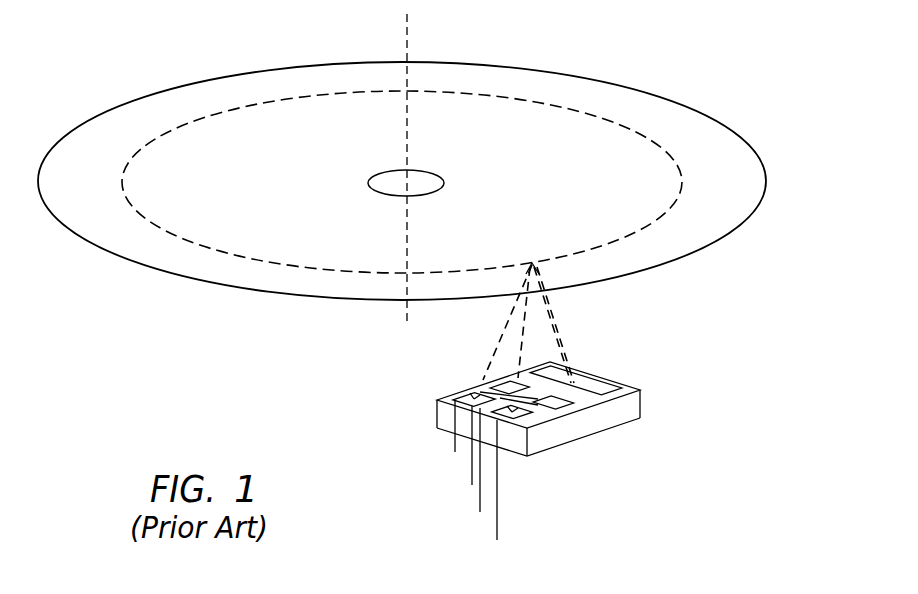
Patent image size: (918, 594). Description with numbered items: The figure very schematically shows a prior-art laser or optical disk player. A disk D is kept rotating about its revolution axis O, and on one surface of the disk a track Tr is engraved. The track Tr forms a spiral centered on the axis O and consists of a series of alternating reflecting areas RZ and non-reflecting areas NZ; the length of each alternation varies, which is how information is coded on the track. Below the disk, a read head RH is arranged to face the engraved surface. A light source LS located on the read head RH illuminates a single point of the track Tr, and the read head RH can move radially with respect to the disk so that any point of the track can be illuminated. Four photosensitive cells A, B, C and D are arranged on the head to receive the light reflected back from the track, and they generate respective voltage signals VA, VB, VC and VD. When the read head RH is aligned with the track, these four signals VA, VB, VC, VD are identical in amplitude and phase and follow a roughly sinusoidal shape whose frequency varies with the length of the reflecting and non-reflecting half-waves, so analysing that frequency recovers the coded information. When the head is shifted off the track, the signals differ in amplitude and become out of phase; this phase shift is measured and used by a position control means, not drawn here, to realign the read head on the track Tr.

The revolution axis O is at (410, 32).
The disk D is at (725, 167).
The track Tr is at (638, 234).
The non-reflecting areas NZ is at (344, 270).
The reflecting areas RZ is at (317, 268).
The read head RH is at (660, 425).
The light source LS is at (605, 379).
The photosensitive cell A is at (477, 396).
The photosensitive cell B is at (520, 411).
The photosensitive cell C is at (556, 401).
The voltage signal VA is at (425, 432).
The voltage signal VD is at (434, 451).
The voltage signal VC is at (438, 464).
The voltage signal VB is at (446, 486).